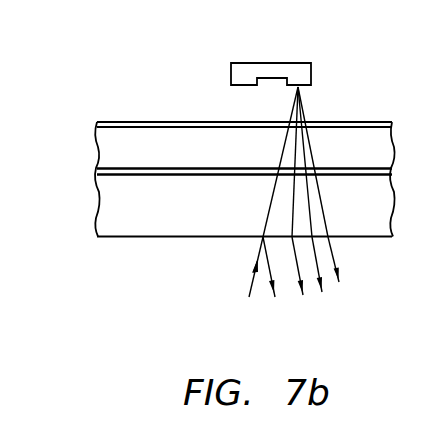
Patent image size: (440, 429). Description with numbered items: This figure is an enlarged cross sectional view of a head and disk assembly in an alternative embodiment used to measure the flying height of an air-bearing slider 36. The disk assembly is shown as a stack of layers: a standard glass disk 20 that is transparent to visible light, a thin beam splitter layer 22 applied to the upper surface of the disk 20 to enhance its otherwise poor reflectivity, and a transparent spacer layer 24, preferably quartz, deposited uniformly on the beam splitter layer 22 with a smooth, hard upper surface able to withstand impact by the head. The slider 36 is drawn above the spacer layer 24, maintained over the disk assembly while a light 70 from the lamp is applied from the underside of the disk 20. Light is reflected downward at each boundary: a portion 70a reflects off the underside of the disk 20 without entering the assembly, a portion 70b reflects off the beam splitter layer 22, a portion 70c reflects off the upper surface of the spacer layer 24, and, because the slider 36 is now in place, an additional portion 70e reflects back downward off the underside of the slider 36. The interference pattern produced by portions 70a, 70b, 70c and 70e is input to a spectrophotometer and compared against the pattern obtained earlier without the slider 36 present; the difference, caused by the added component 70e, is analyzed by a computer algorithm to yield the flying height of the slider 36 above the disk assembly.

The glass disk 20 is at (117, 215).
The beam splitter layer 22 is at (108, 168).
The spacer layer 24 is at (120, 147).
The air-bearing slider 36 is at (271, 63).
The light 70 is at (259, 246).
The light portion reflected off underside of disk 70a is at (268, 268).
The light portion reflected off beam splitter layer 70b is at (296, 258).
The light portion reflected off upper surface of spacer layer 70c is at (320, 264).
The light portion reflected off slider 70e is at (332, 252).